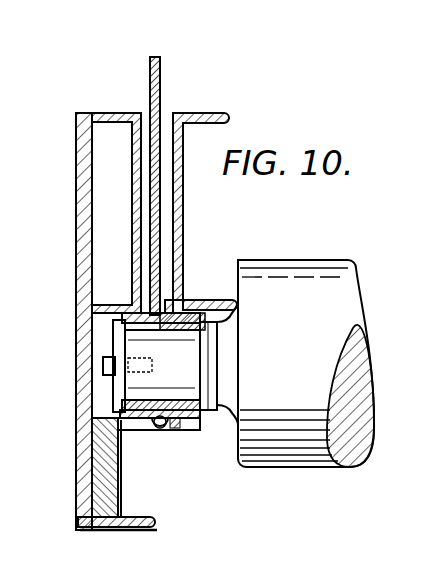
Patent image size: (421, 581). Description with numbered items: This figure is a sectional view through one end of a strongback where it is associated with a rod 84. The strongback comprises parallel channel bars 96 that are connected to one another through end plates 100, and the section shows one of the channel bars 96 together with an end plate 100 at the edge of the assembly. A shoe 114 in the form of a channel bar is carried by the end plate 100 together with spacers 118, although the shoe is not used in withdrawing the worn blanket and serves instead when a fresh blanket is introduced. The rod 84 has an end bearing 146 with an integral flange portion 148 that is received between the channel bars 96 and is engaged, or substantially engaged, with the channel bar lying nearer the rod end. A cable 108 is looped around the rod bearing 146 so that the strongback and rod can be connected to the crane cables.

The rod 84 is at (272, 270).
The channel bars 96 is at (107, 113).
The end plates 100 is at (84, 530).
The cables 108 is at (160, 66).
The shoes 114 is at (154, 524).
The spacers 118 is at (100, 470).
The end bearing 146 is at (196, 317).
The flange portion 148 is at (183, 306).